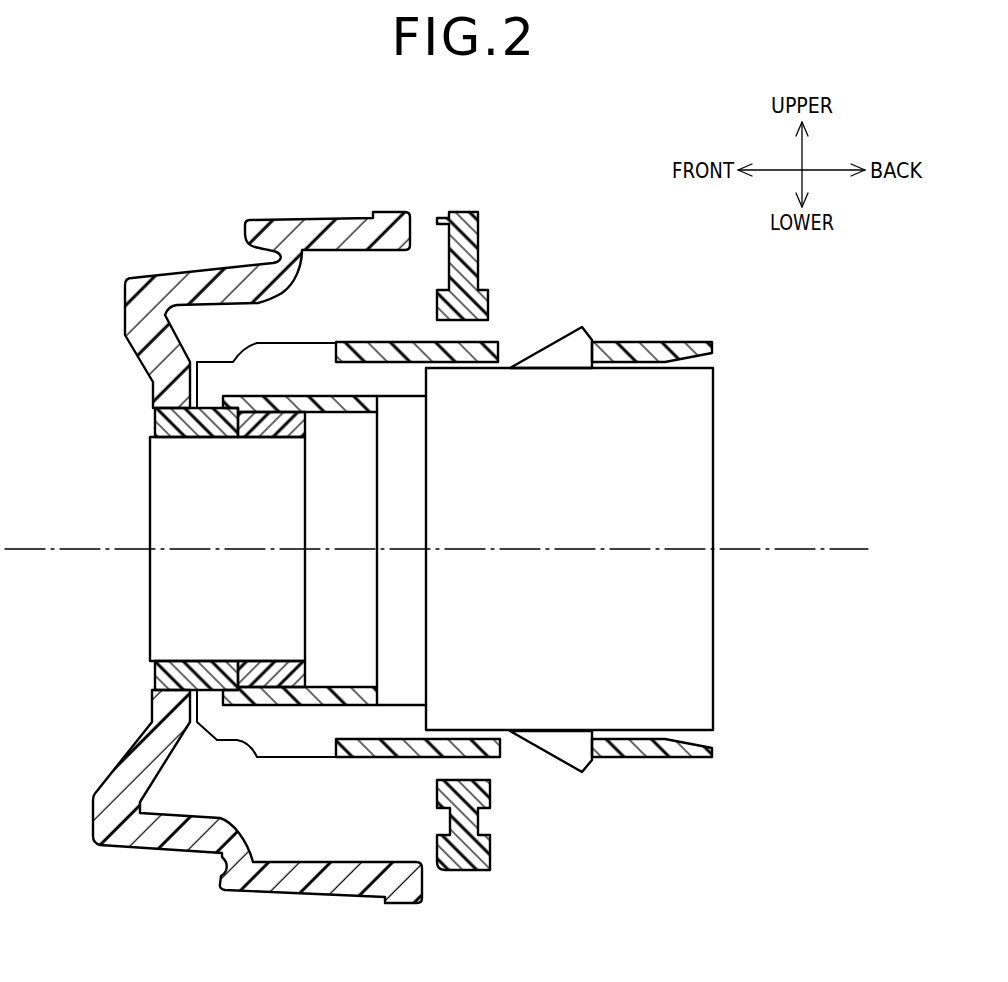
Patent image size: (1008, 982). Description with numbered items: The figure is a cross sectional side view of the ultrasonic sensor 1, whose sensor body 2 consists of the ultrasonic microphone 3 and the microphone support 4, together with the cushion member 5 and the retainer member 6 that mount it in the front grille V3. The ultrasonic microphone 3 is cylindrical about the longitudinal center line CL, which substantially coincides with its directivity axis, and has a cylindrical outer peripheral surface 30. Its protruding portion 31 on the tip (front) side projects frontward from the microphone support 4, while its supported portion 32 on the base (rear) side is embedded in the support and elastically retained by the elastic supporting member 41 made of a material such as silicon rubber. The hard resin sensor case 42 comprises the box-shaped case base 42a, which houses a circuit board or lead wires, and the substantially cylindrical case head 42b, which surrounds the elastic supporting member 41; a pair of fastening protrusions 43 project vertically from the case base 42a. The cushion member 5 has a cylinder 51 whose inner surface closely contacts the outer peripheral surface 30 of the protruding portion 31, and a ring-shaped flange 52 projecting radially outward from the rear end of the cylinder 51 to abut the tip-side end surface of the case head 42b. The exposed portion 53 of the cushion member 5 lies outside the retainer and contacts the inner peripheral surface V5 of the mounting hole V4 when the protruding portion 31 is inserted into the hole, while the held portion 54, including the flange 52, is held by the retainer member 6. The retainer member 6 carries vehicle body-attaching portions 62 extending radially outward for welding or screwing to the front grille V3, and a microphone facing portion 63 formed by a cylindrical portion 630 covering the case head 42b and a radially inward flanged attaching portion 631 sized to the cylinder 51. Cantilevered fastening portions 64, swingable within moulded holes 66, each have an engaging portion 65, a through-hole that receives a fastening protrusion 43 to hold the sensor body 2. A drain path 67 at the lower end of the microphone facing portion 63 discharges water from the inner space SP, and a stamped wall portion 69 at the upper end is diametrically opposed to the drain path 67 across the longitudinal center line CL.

The ultrasonic sensor 1 is at (771, 826).
The sensor body 2 is at (353, 690).
The ultrasonic microphone 3 is at (150, 450).
The microphone support 4 is at (717, 660).
The cushion member 5 is at (146, 672).
The retainer member 6 is at (708, 334).
The outer peripheral surface 30 is at (284, 456).
The protruding portion 31 is at (168, 576).
The supported portion 32 is at (347, 430).
The elastic supporting member 41 is at (352, 395).
The sensor case 42 is at (402, 372).
The case base 42a is at (698, 401).
The case head 42b is at (400, 864).
The fastening protrusions 43 is at (572, 348).
The cylinder 51 is at (160, 426).
The flange 52 is at (232, 406).
The exposed portion 53 is at (148, 738).
The held portion 54 is at (210, 662).
The vehicle body-attaching portions 62 is at (465, 226).
The microphone facing portion 63 is at (171, 803).
The fastening portions 64 is at (665, 750).
The engaging portion 65 is at (592, 765).
The moulded holes 66 is at (488, 768).
The drain path 67 is at (216, 745).
The stamped wall portion 69 is at (257, 355).
The cylindrical portion 630 is at (317, 718).
The flanged attaching portion 631 is at (205, 438).
The longitudinal center line CL is at (849, 527).
The inner space SP is at (262, 765).
The front grille V3 is at (143, 278).
The mounting hole V4 is at (150, 690).
The inner peripheral surface V5 is at (180, 437).